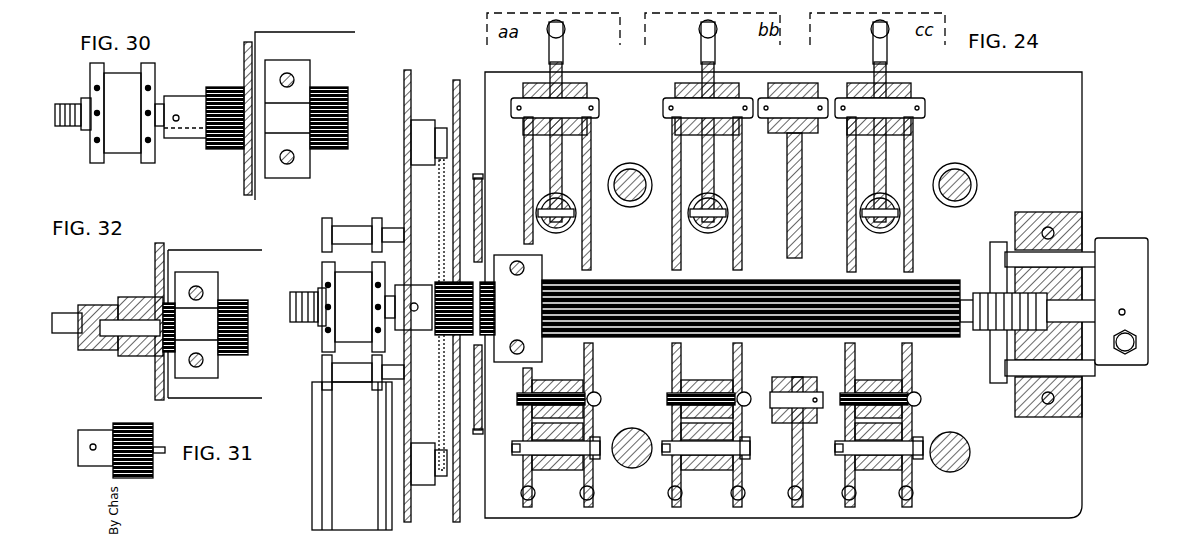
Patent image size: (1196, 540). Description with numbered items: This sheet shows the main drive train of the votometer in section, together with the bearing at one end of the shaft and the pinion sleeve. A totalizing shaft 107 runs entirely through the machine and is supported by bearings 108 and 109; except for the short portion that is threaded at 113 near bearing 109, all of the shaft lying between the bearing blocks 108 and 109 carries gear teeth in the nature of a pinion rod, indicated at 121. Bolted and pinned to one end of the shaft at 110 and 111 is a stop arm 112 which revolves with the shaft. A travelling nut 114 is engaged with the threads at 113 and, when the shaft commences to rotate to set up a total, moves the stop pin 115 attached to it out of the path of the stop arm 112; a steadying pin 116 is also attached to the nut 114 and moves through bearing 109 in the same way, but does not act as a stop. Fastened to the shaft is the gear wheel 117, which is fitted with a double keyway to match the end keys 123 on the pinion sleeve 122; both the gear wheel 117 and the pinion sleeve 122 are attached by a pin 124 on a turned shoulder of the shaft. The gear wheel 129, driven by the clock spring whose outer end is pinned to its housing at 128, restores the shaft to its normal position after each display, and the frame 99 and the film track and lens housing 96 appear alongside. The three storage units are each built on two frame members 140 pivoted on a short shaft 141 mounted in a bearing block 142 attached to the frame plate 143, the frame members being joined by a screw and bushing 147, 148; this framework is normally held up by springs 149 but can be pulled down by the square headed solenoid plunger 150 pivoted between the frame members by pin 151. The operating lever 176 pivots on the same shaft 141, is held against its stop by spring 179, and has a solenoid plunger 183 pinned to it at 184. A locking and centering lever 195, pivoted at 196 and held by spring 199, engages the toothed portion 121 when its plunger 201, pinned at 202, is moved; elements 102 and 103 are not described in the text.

In FIG. 24, the film track and lens housing 96 is at (332, 478).
In FIG. 24, the frame 99 is at (455, 512).
In FIG. 24, the bearing block 102 is at (322, 330).
In FIG. 24, the rollers 103 is at (322, 232).
In FIG. 30, the totalizing shaft 107 is at (68, 103).
In FIG. 32, the totalizing shaft 107 is at (65, 318).
In FIG. 24, the totalizing shaft 107 is at (302, 292).
In FIG. 30, the bearing 108 is at (290, 62).
In FIG. 32, the bearing 108 is at (192, 278).
In FIG. 24, the bearing 108 is at (514, 258).
In FIG. 24, the bearing 109 is at (1046, 212).
In FIG. 24, the bolt 110 is at (1134, 346).
In FIG. 24, the pin 111 is at (1126, 311).
In FIG. 24, the stop arm 112 is at (1150, 248).
In FIG. 24, the threaded portion 113 is at (990, 292).
In FIG. 24, the travelling nut 114 is at (995, 252).
In FIG. 24, the stop pin 115 is at (1085, 248).
In FIG. 24, the steadying pin 116 is at (1085, 378).
In FIG. 30, the gear wheel 117 is at (246, 168).
In FIG. 32, the gear wheel 117 is at (155, 260).
In FIG. 24, the gear wheel 117 is at (478, 196).
In FIG. 24, the pinion rod gear teeth 121 is at (786, 281).
In FIG. 30, the pinion sleeve 122 is at (190, 140).
In FIG. 32, the pinion sleeve 122 is at (138, 304).
In FIG. 31, the pinion sleeve 122 is at (95, 432).
In FIG. 31, the end keys 123 is at (158, 455).
In FIG. 30, the pin 124 is at (176, 115).
In FIG. 32, the pin 124 is at (92, 348).
In FIG. 31, the pin 124 is at (92, 452).
In FIG. 32, the outer end pinning point 128 is at (140, 356).
In FIG. 24, the gear wheel 129 is at (440, 166).
In FIG. 24, the frame member 140 is at (592, 150).
In FIG. 24, the short shaft 141 is at (600, 108).
In FIG. 24, the bearing block 142 is at (576, 90).
In FIG. 24, the frame plate 143 is at (1084, 465).
In FIG. 24, the screw 147 is at (600, 396).
In FIG. 24, the bushing 148 is at (560, 385).
In FIG. 24, the springs 149 is at (717, 494).
In FIG. 24, the square headed solenoid plunger 150 is at (706, 494).
In FIG. 24, the pin 151 is at (562, 450).
In FIG. 24, the operating lever 176 is at (553, 165).
In FIG. 24, the spring 179 is at (565, 30).
In FIG. 24, the solenoid plunger 183 is at (576, 212).
In FIG. 24, the pin 184 is at (568, 228).
In FIG. 24, the locking and centering lever 195 is at (790, 176).
In FIG. 24, the pivot 196 is at (818, 100).
In FIG. 24, the spring 199 is at (788, 494).
In FIG. 24, the plunger 201 is at (808, 378).
In FIG. 24, the pin 202 is at (770, 392).